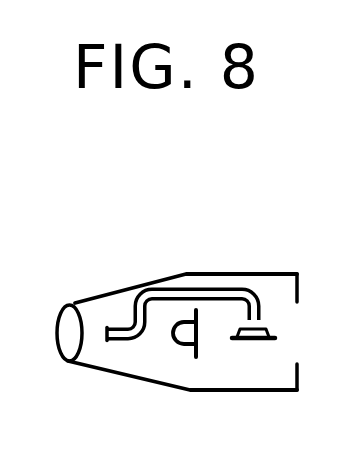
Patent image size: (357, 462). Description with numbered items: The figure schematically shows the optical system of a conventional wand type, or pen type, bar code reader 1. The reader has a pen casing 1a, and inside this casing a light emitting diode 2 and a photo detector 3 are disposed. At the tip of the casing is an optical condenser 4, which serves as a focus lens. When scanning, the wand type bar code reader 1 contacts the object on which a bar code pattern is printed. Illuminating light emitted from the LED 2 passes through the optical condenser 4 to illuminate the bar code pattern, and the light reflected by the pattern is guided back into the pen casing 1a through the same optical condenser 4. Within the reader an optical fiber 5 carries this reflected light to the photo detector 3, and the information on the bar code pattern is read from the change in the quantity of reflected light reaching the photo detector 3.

The wand type bar code reader 1 is at (110, 288).
The pen casing 1a is at (125, 373).
The light emitting diode 2 is at (185, 337).
The photo detector 3 is at (257, 340).
The optical condenser 4 is at (72, 348).
The optical fiber 5 is at (222, 290).